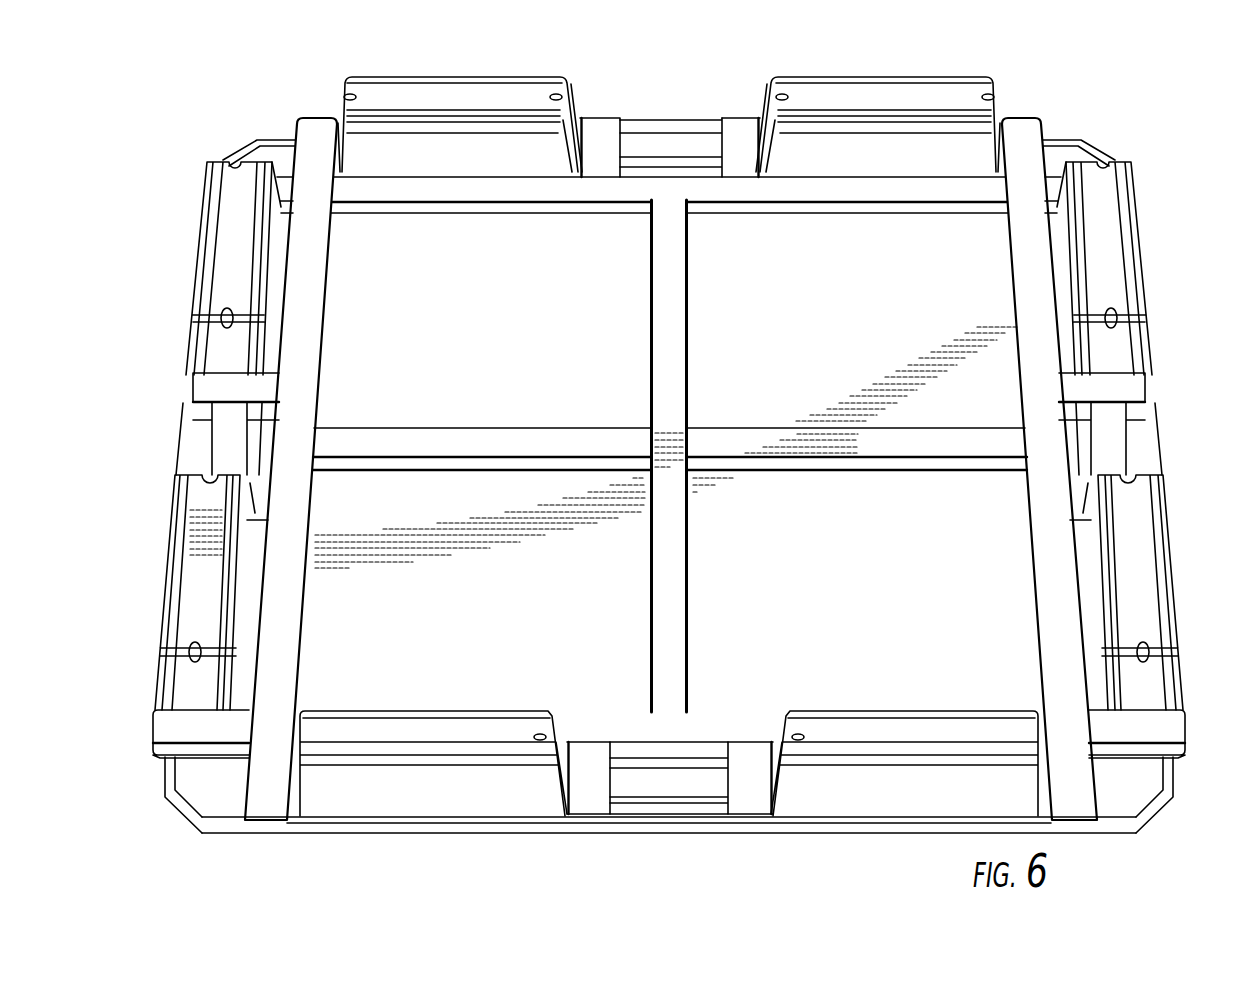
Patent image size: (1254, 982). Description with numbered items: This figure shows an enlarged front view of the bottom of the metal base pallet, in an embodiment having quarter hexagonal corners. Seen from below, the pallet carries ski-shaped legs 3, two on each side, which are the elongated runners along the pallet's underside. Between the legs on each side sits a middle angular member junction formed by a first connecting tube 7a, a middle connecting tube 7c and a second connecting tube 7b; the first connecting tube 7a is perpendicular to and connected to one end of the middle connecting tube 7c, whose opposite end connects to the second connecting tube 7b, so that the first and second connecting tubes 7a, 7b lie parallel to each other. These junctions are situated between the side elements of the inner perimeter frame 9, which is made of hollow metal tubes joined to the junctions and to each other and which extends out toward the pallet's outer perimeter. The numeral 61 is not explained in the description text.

The ski-shaped leg 3 is at (446, 83).
The first connecting tube 7a is at (607, 142).
The second connecting tube 7b is at (752, 142).
The middle connecting tube 7c is at (680, 147).
The inner perimeter frame 9 is at (305, 132).
The center rib 61 is at (727, 471).